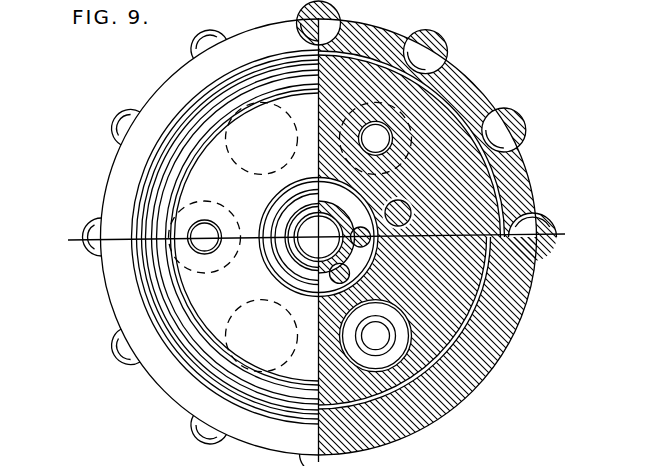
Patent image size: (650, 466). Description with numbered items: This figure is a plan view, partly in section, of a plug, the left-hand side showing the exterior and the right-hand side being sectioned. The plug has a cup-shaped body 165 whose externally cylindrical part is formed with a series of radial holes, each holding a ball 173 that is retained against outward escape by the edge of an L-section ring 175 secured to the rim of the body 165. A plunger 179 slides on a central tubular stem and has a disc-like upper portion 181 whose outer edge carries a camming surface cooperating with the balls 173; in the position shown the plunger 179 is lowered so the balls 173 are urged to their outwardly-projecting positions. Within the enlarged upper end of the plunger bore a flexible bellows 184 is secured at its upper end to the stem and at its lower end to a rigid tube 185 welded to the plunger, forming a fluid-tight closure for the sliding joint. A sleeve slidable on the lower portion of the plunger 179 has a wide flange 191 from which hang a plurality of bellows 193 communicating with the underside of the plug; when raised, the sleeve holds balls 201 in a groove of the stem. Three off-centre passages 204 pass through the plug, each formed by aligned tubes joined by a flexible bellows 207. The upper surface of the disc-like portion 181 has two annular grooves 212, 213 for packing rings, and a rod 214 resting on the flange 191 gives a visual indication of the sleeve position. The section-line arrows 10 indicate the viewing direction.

The section line / viewing direction arrows 10 is at (68, 224).
The L-section ring 175 is at (113, 193).
The ball 173 is at (193, 48).
The cup-shaped body 165 is at (520, 185).
The bellows 193 is at (244, 128).
The annular groove 213 is at (257, 82).
The annular groove 212 is at (280, 80).
The disc-like upper portion 181 is at (212, 288).
The plunger 179 is at (430, 132).
The wide flange 191 is at (493, 325).
The passage 204 is at (207, 228).
The flexible bellows 207 is at (371, 104).
The rigid tube 185 is at (297, 160).
The ball 201 is at (322, 287).
The rod 214 is at (398, 213).
The flexible bellows 184 is at (318, 194).